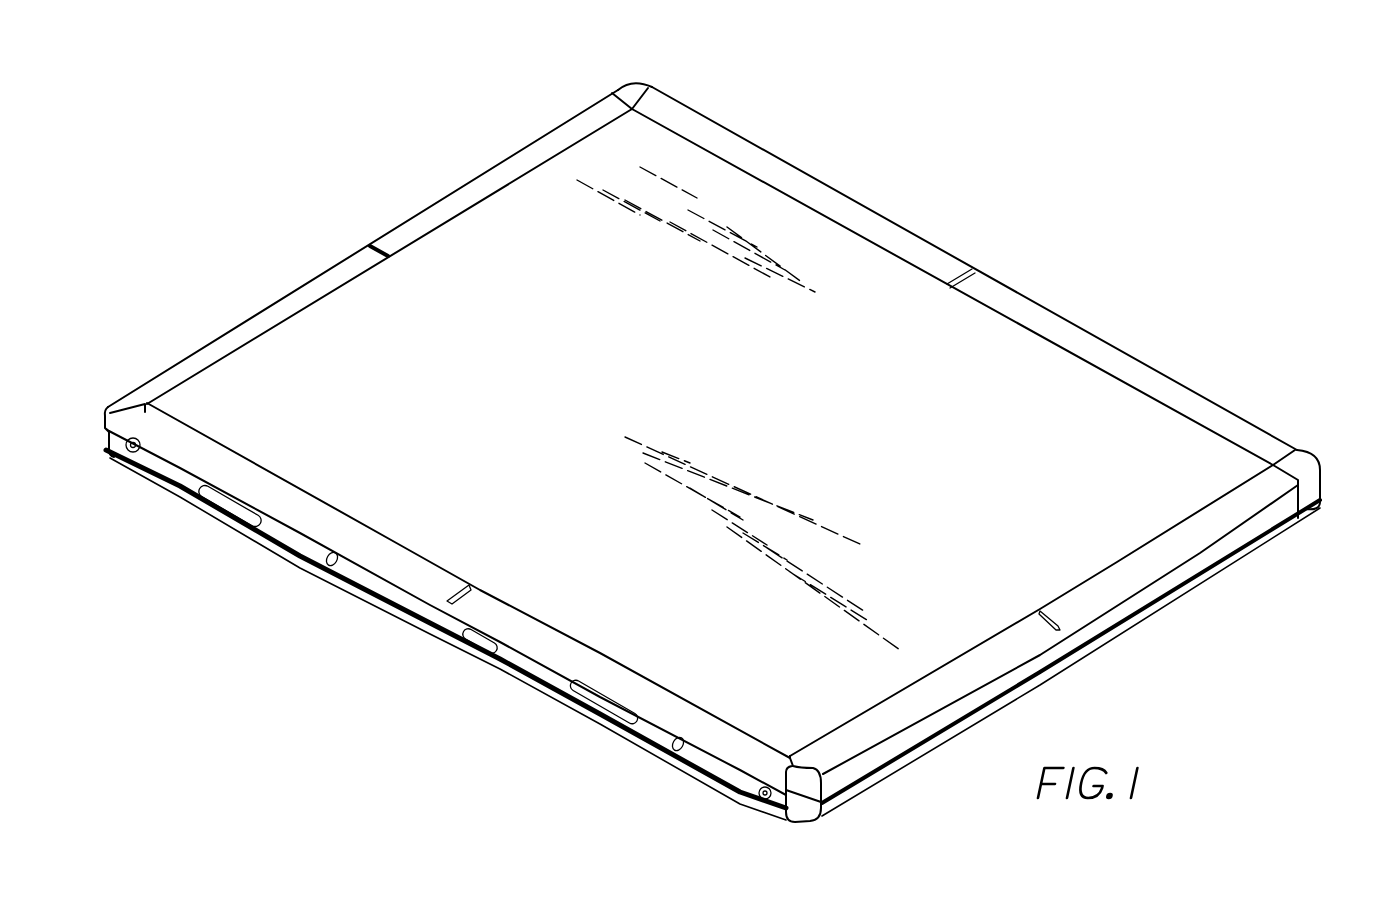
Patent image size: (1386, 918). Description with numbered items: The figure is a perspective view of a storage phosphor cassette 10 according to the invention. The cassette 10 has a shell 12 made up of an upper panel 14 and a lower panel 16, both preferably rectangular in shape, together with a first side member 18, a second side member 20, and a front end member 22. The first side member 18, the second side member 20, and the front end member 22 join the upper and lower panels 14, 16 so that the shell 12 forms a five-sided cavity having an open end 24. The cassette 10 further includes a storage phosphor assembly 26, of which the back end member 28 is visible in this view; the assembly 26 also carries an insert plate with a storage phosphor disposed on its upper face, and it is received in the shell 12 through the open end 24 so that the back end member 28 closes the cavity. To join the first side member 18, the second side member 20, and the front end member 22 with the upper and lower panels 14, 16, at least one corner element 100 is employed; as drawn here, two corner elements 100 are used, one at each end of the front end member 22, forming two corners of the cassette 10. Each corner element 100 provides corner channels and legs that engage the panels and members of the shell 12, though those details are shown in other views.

The storage phosphor cassette 10 is at (948, 200).
The shell 12 is at (724, 121).
The upper panel 14 is at (1075, 368).
The lower panel 16 is at (922, 757).
The first side member 18 is at (332, 272).
The second side member 20 is at (1096, 596).
The front end member 22 is at (805, 183).
The open end 24 is at (626, 670).
The storage phosphor assembly 26 is at (675, 768).
The back end member 28 is at (728, 775).
The corner element 100 is at (645, 80).